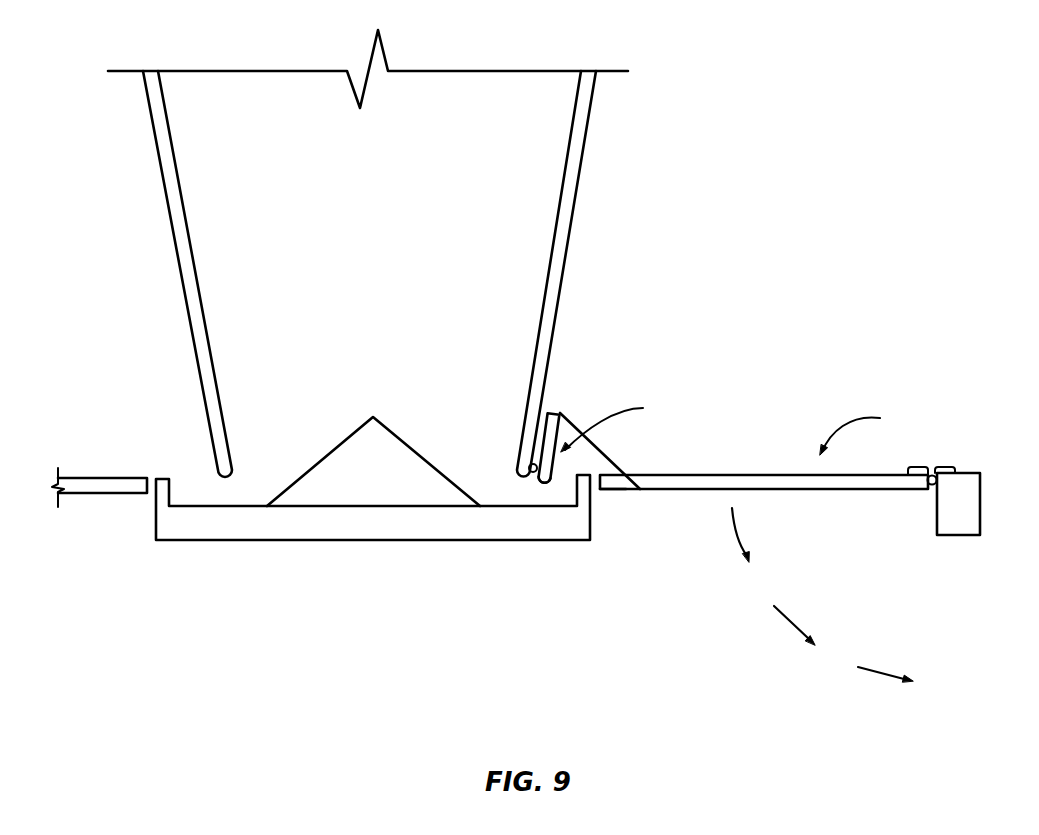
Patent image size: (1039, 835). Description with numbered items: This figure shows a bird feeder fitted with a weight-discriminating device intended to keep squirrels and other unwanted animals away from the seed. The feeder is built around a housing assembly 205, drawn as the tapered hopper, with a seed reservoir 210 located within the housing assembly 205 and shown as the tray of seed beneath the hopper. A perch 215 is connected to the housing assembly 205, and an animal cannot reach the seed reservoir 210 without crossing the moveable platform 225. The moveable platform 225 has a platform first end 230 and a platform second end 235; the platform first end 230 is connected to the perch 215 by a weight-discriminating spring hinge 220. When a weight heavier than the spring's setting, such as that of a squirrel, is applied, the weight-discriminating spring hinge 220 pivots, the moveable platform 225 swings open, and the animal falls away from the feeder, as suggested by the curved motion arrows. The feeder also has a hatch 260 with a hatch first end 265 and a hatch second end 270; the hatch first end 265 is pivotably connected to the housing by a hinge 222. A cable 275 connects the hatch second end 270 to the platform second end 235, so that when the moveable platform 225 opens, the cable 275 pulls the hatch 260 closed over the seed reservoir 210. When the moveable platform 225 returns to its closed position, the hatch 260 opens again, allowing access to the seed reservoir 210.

The housing assembly 205 is at (560, 282).
The seed reservoir 210 is at (263, 483).
The perch 215 is at (960, 535).
The weight-discriminating spring hinge 220 is at (934, 470).
The hinge 222 is at (535, 472).
The moveable platform 225 is at (764, 449).
The platform first end 230 is at (920, 490).
The platform second end 235 is at (612, 490).
The hatch 260 is at (625, 426).
The hatch first end 265 is at (545, 479).
The hatch second end 270 is at (557, 413).
The cable 275 is at (606, 456).